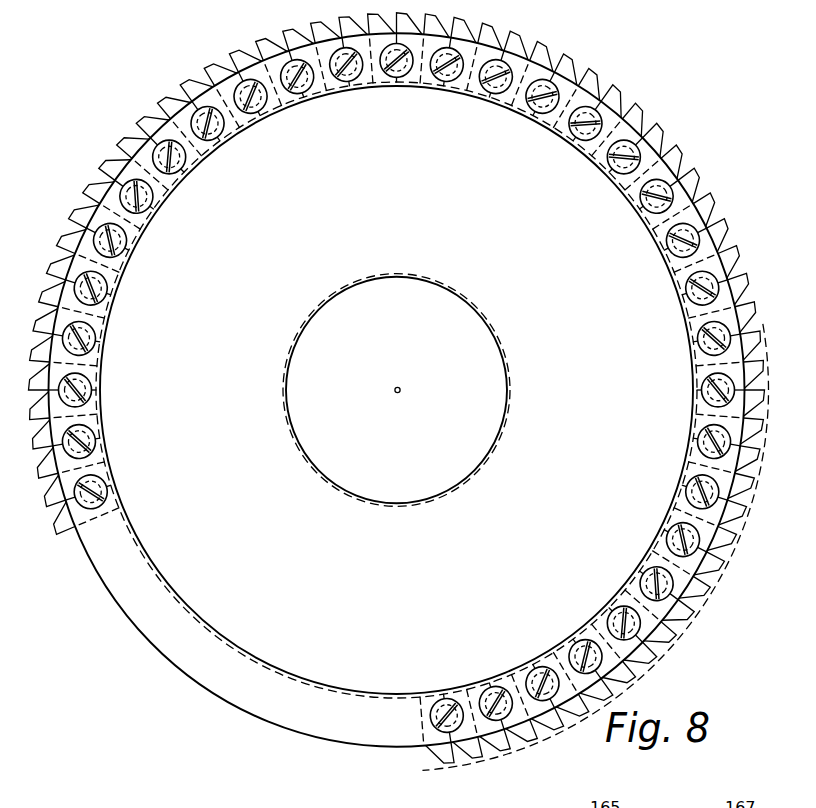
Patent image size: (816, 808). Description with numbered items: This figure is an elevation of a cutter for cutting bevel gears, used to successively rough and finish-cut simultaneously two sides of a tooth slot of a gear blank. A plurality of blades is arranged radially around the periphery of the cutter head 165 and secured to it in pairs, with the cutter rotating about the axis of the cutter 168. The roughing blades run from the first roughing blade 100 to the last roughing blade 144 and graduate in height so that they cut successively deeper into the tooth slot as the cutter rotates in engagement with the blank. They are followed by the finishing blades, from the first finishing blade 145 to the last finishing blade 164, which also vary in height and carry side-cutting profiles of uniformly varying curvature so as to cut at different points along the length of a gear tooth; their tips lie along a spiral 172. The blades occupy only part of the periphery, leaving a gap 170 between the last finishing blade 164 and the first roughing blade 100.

The first roughing blade 100 is at (64, 521).
The last roughing blade 144 is at (693, 357).
The first finishing blade 145 is at (758, 372).
The last finishing blade 164 is at (443, 756).
The cutter head 165 is at (396, 390).
The axis of the cutter 168 is at (400, 388).
The gap 170 is at (256, 720).
The spiral 172 is at (688, 616).